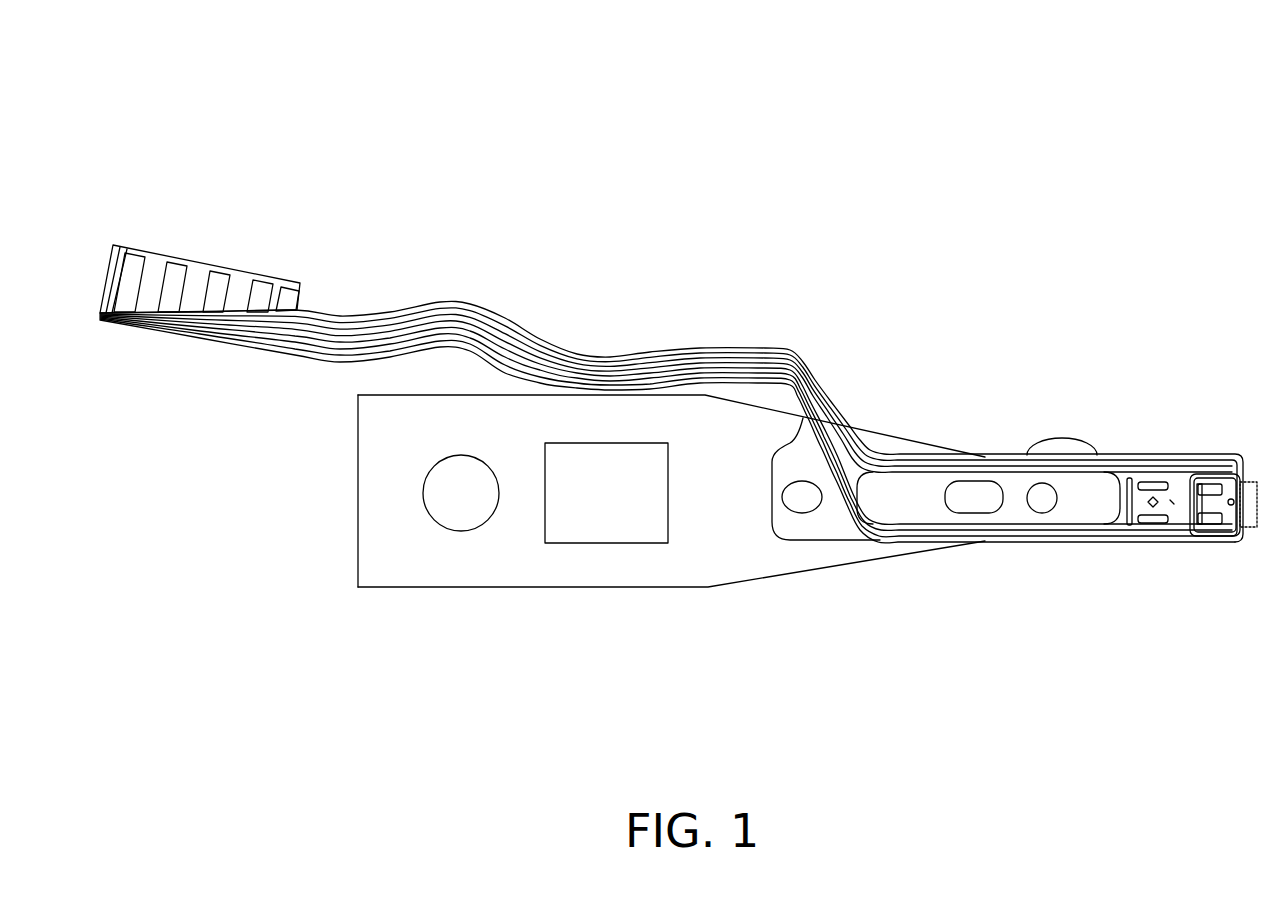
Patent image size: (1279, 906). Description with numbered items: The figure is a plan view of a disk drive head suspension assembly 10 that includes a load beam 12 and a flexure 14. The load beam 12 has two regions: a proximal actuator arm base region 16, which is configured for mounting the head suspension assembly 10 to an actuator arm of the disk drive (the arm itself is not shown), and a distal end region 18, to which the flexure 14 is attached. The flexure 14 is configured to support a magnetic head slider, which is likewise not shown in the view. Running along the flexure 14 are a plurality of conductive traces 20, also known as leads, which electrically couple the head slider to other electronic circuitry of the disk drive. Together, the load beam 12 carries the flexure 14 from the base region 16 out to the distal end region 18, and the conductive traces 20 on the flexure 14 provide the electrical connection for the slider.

The disk drive head suspension assembly 10 is at (485, 183).
The load beam 12 is at (440, 613).
The flexure 14 is at (855, 558).
The proximal actuator arm base region 16 is at (358, 522).
The distal end region 18 is at (1000, 455).
The conductive traces 20 is at (1017, 543).